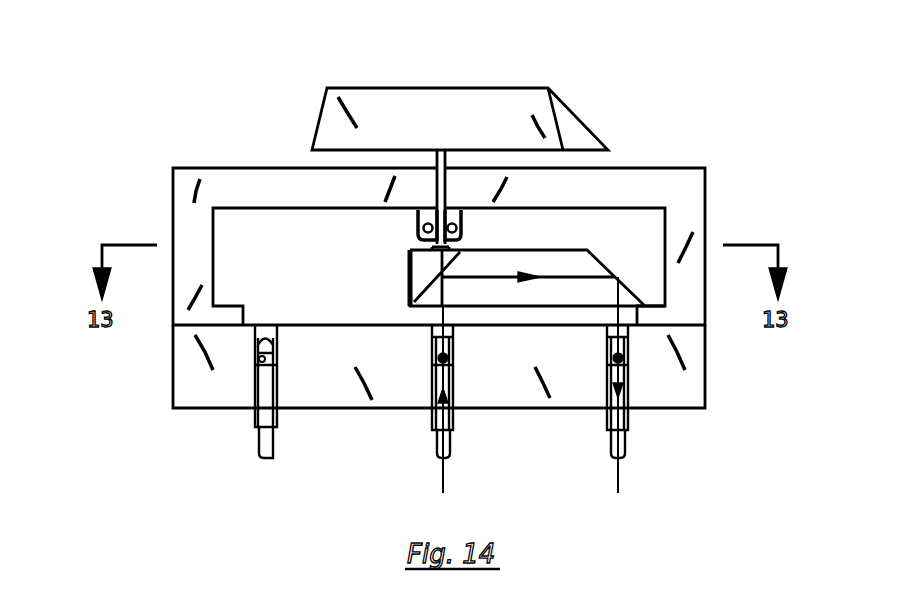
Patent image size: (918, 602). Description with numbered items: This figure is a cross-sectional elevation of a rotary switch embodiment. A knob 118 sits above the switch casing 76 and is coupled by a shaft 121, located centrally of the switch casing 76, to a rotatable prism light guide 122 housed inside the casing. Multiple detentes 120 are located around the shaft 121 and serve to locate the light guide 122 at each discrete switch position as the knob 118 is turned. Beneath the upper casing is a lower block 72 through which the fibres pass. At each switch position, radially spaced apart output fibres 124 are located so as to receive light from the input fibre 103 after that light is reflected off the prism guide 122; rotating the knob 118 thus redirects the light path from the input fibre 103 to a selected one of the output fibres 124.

The switch casing 76 is at (692, 192).
The base block 72 is at (693, 370).
The knob 118 is at (515, 102).
The shaft 121 is at (437, 153).
The detentes 120 is at (418, 232).
The rotatable prism light guide 122 is at (605, 265).
The input fibre 103 is at (433, 417).
The output fibres 124 is at (623, 420).